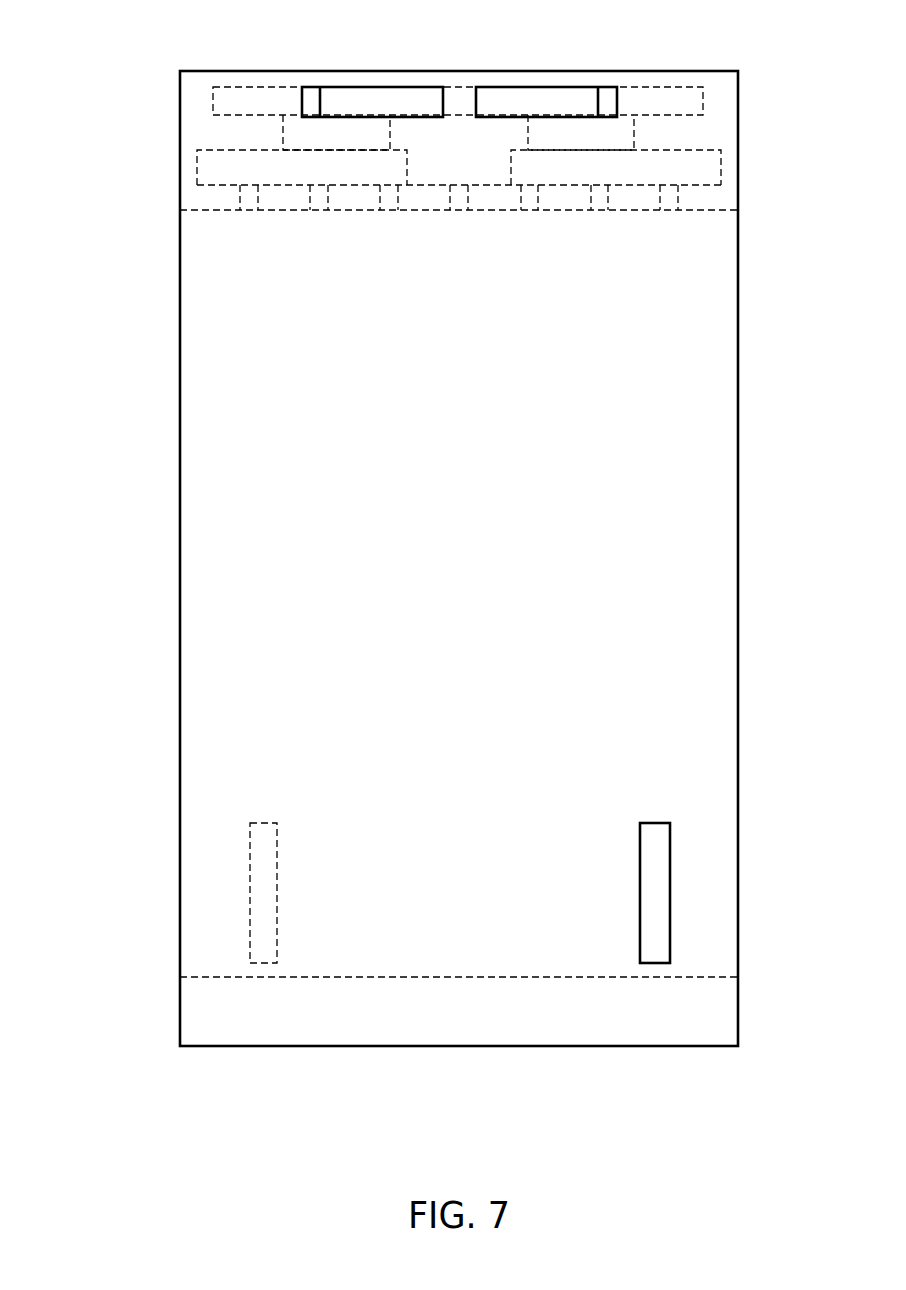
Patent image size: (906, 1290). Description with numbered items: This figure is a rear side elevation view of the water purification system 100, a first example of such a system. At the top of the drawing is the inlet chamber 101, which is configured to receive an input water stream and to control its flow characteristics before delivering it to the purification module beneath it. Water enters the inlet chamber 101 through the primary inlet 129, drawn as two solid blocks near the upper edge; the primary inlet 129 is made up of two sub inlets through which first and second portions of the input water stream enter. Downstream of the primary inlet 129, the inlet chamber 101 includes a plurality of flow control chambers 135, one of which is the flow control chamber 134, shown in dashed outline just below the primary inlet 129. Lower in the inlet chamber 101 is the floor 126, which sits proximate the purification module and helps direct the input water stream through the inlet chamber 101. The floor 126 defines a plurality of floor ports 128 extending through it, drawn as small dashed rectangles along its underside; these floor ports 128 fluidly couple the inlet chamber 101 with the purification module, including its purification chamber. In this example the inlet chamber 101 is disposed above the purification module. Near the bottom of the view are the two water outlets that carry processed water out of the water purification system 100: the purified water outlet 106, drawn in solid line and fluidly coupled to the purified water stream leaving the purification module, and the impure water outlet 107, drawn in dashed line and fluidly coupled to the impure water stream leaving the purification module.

The water purification system 100 is at (411, 528).
The inlet chamber 101 is at (702, 133).
The purified water outlet 106 is at (640, 855).
The impure water outlet 107 is at (277, 855).
The floor 126 is at (565, 197).
The plurality of floor ports 128 is at (602, 197).
The primary inlet 129 is at (429, 81).
The flow control chamber 134 is at (213, 103).
The plurality of flow control chambers 135 is at (204, 125).